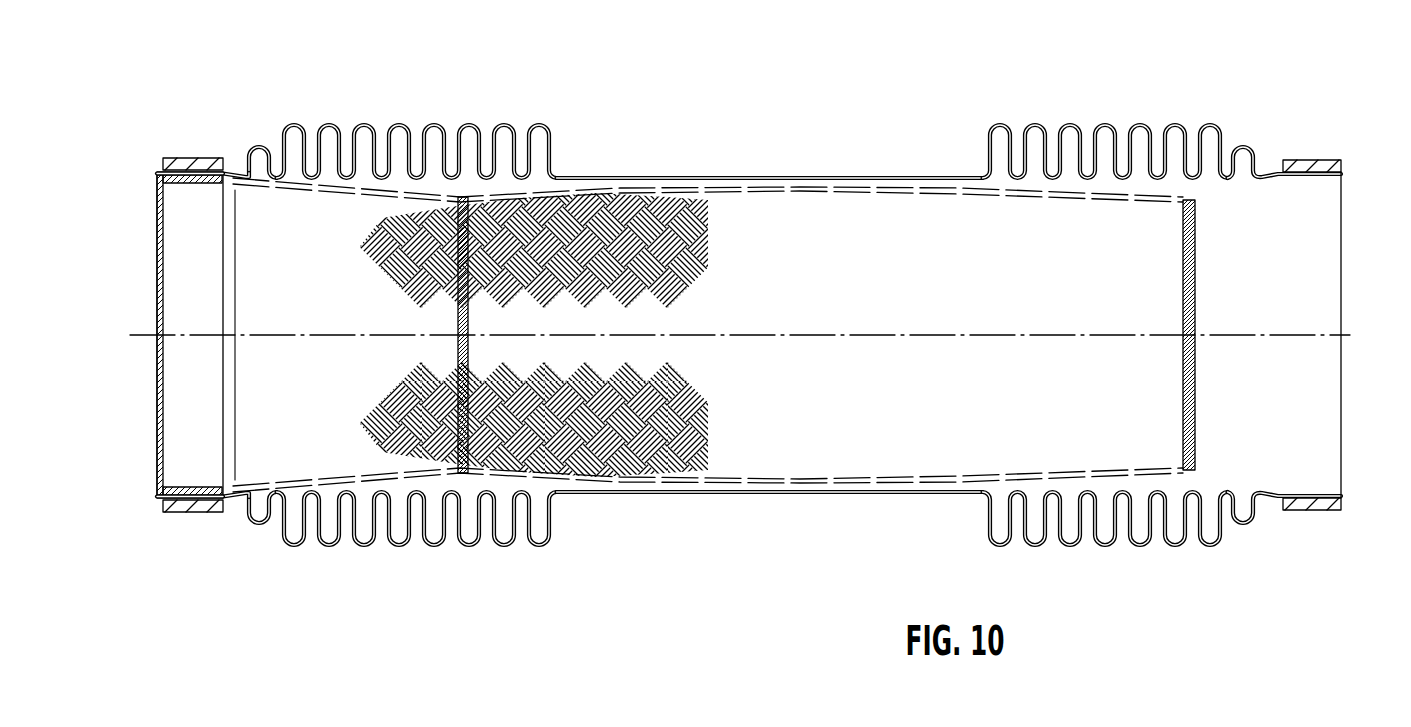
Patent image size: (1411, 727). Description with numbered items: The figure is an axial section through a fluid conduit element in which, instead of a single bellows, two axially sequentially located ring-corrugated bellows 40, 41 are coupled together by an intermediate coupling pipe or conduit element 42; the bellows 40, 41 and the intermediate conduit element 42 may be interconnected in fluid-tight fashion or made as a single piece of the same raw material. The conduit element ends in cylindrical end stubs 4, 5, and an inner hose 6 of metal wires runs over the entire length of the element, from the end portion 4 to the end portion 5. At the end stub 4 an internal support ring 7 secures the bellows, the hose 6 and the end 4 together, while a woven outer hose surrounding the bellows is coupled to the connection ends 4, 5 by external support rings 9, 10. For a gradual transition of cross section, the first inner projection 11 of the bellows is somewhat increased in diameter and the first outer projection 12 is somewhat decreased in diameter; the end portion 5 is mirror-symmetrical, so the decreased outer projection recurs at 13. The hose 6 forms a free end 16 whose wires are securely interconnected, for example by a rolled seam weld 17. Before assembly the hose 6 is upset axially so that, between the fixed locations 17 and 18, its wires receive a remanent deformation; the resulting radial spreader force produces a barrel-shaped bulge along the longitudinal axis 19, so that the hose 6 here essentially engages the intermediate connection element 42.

The cylindrical end stub 4 is at (163, 169).
The cylindrical end stub 5 is at (1305, 498).
The inner hose 6 is at (293, 423).
The internal support ring 7 is at (185, 408).
The external support ring 9 is at (194, 157).
The external support ring 10 is at (1312, 160).
The first inner projection 11 is at (243, 172).
The first outer projection 12 is at (261, 147).
The decreased-diameter outer projection 13 is at (1249, 523).
The free end of inner hose 16 is at (1093, 403).
The rolled seam weld 17 is at (1194, 297).
The fixed location 18 is at (455, 420).
The longitudinal axis 19 is at (820, 335).
The bellows 40 is at (377, 137).
The bellows 41 is at (1082, 140).
The intermediate coupling pipe 42 is at (610, 490).